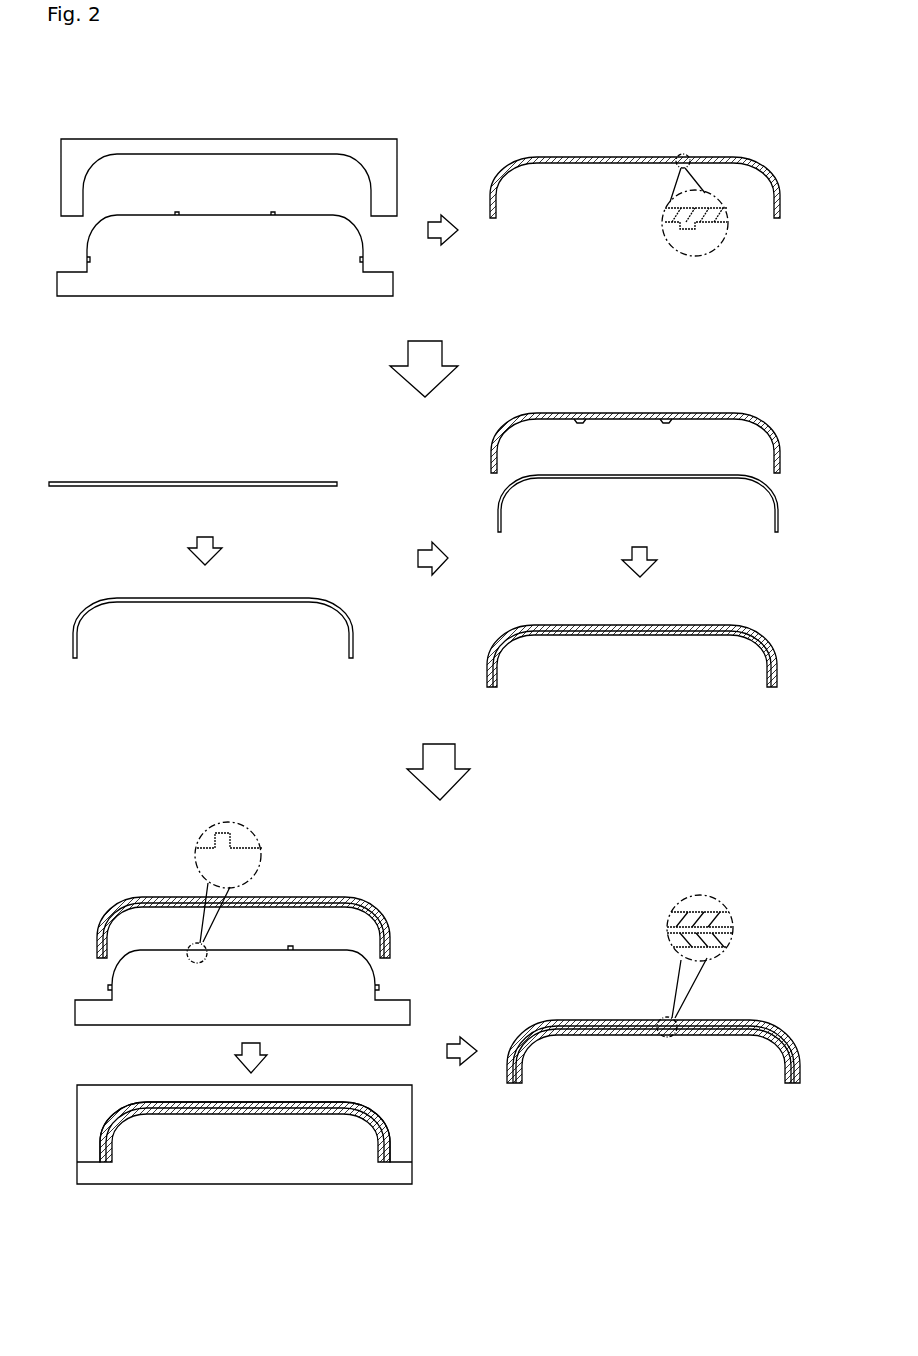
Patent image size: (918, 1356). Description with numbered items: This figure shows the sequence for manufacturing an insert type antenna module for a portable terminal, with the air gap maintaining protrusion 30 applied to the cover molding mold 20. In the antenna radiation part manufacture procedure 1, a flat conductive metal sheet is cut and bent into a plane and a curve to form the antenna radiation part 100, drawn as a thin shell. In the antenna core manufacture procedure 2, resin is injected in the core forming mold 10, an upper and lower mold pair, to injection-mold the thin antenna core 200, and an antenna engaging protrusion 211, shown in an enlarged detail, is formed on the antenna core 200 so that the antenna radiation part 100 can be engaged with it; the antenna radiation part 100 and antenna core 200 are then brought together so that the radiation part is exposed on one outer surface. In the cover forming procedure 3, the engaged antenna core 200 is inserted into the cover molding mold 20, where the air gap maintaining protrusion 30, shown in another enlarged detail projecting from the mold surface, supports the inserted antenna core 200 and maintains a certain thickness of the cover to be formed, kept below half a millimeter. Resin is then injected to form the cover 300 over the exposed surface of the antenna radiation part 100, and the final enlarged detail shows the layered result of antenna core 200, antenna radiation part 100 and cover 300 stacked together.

The core forming mold 10 is at (223, 118).
The cover molding mold 20 is at (112, 1077).
The air gap maintaining protrusion 30 is at (228, 835).
The antenna radiation part 100 is at (292, 587).
The antenna core 200 is at (660, 148).
The antenna engaging protrusion 211 is at (690, 250).
The cover 300 is at (717, 950).
The antenna radiation part manufacture procedure 1 is at (210, 450).
The antenna core manufacture procedure 2 is at (422, 102).
The cover forming procedure 3 is at (462, 917).